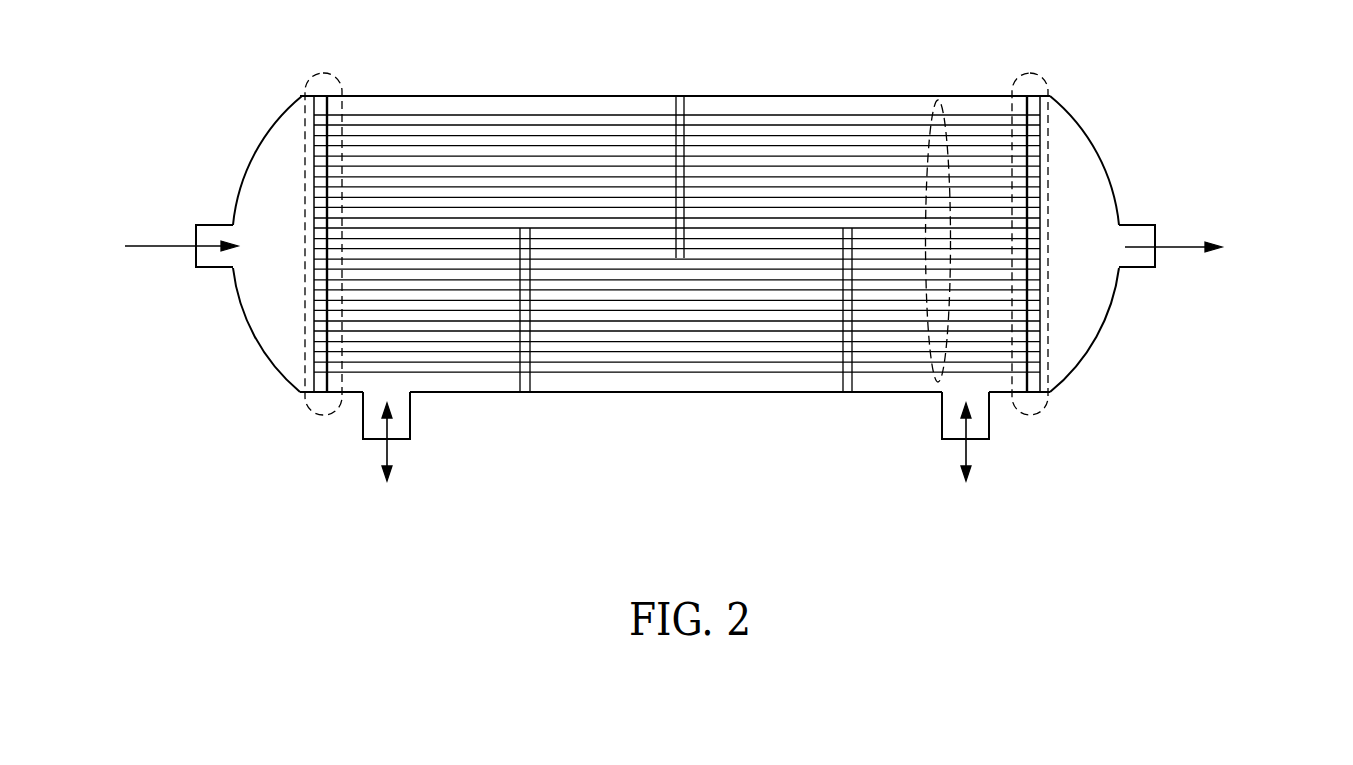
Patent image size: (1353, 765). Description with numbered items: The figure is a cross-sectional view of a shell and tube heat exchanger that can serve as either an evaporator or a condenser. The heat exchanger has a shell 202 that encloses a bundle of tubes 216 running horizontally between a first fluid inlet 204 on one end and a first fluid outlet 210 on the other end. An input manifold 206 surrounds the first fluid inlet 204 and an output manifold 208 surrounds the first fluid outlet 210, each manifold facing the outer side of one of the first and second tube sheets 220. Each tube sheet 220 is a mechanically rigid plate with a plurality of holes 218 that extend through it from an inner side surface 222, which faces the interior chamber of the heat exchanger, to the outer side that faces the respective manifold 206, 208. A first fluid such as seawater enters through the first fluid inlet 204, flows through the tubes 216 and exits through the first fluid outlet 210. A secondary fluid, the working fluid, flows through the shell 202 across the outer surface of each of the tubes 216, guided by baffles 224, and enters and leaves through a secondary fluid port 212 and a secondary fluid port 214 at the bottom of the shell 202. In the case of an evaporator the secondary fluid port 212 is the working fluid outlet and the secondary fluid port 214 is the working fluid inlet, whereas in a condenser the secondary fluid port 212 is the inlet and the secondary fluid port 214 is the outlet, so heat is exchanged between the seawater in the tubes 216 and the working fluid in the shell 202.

The shell 202 is at (458, 95).
The first fluid inlet 204 is at (196, 257).
The input manifold 206 is at (269, 132).
The output manifold 208 is at (1086, 128).
The first fluid outlet 210 is at (1156, 261).
The secondary fluid port 212 is at (411, 410).
The secondary fluid port 214 is at (990, 427).
The tubes 216 is at (938, 100).
The holes 218 is at (322, 120).
The tube sheets 220 is at (303, 93).
The inner side surface 222 is at (322, 73).
The baffles 224 is at (680, 95).